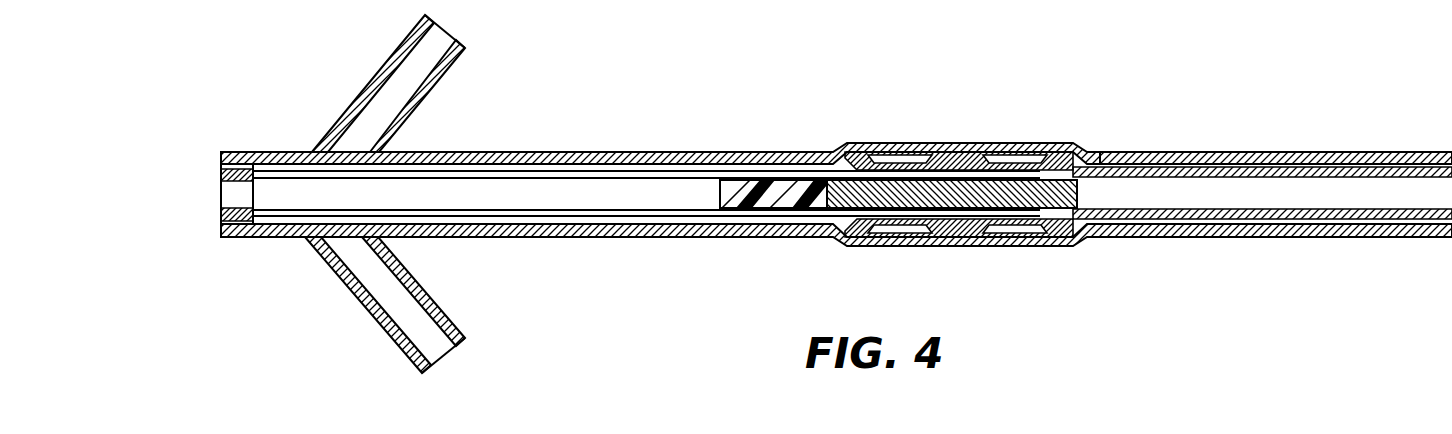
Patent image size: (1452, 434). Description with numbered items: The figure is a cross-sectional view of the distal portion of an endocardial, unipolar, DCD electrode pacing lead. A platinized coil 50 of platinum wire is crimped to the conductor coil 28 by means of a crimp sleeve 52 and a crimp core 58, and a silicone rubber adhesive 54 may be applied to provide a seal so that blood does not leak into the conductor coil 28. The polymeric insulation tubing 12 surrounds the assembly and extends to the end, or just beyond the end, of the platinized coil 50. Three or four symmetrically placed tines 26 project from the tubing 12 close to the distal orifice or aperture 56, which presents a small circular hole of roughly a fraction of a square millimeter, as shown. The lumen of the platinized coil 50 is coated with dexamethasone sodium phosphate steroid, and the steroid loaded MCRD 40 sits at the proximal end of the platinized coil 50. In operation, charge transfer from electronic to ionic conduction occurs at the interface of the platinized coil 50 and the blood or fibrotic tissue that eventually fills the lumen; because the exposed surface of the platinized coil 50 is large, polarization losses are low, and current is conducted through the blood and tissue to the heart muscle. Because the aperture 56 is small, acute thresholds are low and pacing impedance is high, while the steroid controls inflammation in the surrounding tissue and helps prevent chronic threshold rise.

The polymeric insulation tubing 12 is at (1153, 237).
The tines 26 is at (437, 55).
The conductor coil 28 is at (1283, 170).
The steroid loaded MCRD 40 is at (792, 187).
The platinized coil 50 is at (684, 217).
The crimp sleeve 52 is at (1020, 163).
The silicone rubber adhesive 54 is at (1147, 157).
The distal orifice or aperture 56 is at (218, 215).
The crimp core 58 is at (862, 213).